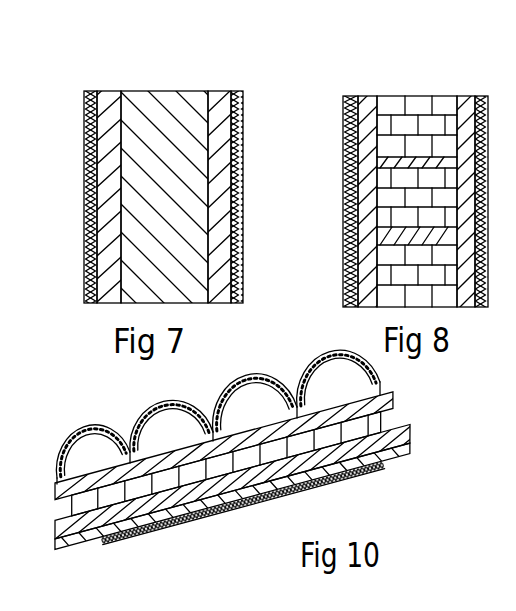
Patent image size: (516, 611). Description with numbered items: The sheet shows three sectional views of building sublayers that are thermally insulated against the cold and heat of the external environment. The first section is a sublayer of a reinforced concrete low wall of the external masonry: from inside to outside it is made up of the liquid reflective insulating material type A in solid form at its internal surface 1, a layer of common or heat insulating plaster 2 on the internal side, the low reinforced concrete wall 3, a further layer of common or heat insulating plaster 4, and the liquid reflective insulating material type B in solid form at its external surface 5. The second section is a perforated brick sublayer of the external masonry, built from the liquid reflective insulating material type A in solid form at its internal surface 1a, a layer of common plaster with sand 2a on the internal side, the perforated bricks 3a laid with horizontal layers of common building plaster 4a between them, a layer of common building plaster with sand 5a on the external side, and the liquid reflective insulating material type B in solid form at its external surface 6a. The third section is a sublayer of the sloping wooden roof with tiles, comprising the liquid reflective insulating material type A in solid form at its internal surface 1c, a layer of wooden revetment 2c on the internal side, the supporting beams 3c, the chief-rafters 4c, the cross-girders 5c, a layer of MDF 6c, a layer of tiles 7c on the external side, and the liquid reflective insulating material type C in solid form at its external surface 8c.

In FIG. 7, the liquid reflective insulating material type A in solid form 1 is at (92, 91).
In FIG. 7, the layer of common or heat insulating plaster 2 is at (108, 91).
In FIG. 7, the low reinforced concrete wall 3 is at (163, 91).
In FIG. 7, the layer of common or heat insulating plaster 4 is at (217, 91).
In FIG. 7, the liquid reflective insulating material type B in solid form 5 is at (238, 91).
In FIG. 8, the liquid reflective insulating material type A in solid form 1a is at (348, 96).
In FIG. 8, the layer of common plaster with sand 2a is at (368, 96).
In FIG. 8, the perforated bricks 3a is at (398, 96).
In FIG. 8, the horizontal layers of common building plaster 4a is at (423, 165).
In FIG. 8, the layer of common building plaster with sand 5a is at (463, 96).
In FIG. 8, the liquid reflective insulating material type B in solid form 6a is at (485, 96).
In FIG. 10, the liquid reflective insulating material type A in solid form 1c is at (203, 518).
In FIG. 10, the layer of wooden revetment 2c is at (257, 487).
In FIG. 10, the supporting beams 3c is at (390, 458).
In FIG. 10, the chief-rafters 4c is at (388, 423).
In FIG. 10, the cross-girders 5c is at (80, 505).
In FIG. 10, the layer of MDF 6c is at (100, 497).
In FIG. 10, the layer of tiles 7c is at (253, 367).
In FIG. 10, the liquid reflective insulating material type C in solid form 8c is at (319, 354).